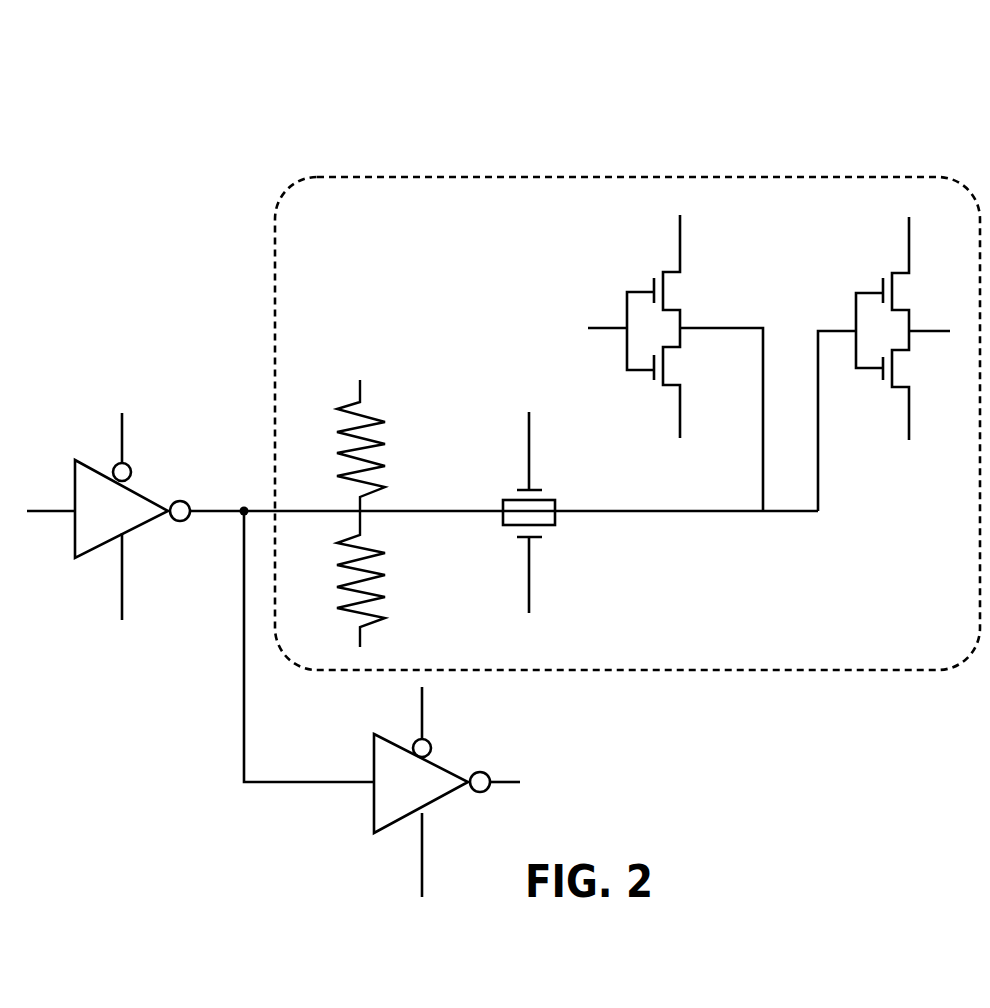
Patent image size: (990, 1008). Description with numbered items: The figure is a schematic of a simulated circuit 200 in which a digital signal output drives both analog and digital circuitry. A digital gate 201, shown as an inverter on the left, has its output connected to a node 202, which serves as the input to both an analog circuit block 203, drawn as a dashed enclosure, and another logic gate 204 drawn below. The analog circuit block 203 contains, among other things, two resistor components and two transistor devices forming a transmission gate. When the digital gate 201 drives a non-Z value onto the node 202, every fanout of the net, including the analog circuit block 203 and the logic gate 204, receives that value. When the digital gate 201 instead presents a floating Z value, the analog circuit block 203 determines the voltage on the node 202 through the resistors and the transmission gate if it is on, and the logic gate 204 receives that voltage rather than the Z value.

The circuit 200 is at (266, 122).
The digital gate 201 is at (142, 492).
The node 202 is at (237, 514).
The analog circuit block 203 is at (750, 179).
The logic gate 204 is at (445, 768).